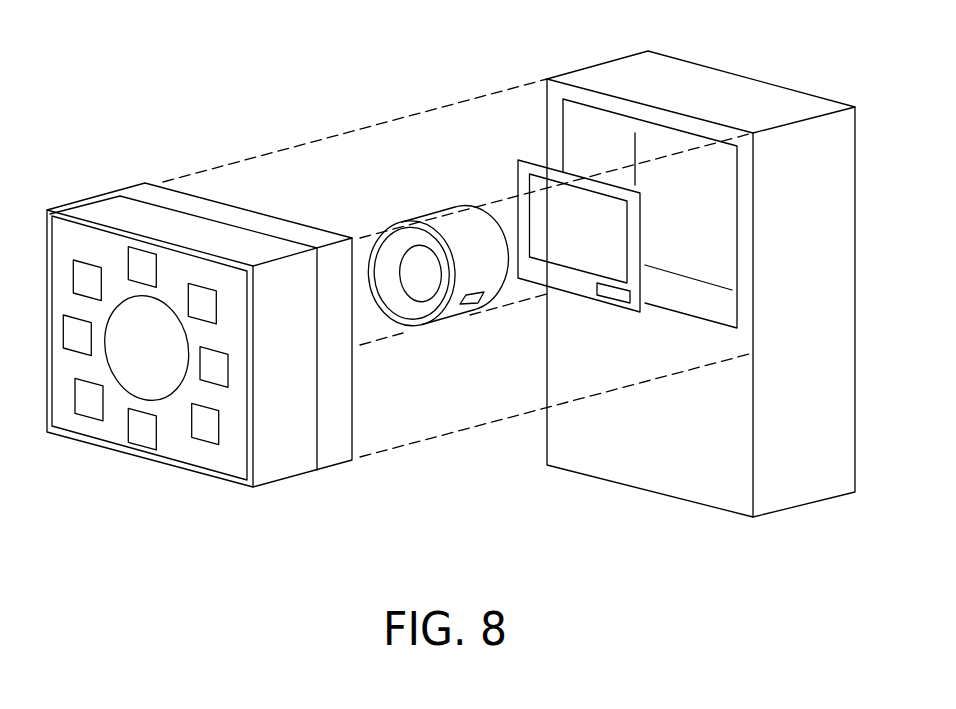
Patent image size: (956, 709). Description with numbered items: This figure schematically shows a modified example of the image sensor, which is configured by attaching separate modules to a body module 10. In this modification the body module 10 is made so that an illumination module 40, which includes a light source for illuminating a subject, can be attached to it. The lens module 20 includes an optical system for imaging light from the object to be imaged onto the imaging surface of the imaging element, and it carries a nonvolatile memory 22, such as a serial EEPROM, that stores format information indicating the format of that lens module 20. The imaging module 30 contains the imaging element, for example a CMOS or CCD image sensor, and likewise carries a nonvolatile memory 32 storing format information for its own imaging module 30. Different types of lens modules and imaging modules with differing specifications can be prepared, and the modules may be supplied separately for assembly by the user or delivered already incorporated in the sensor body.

The body module 10 is at (748, 87).
The lens module 20 is at (427, 220).
The nonvolatile memory 22 is at (474, 306).
The imaging module 30 is at (540, 170).
The nonvolatile memory 32 is at (614, 297).
The illumination module 40 is at (129, 203).